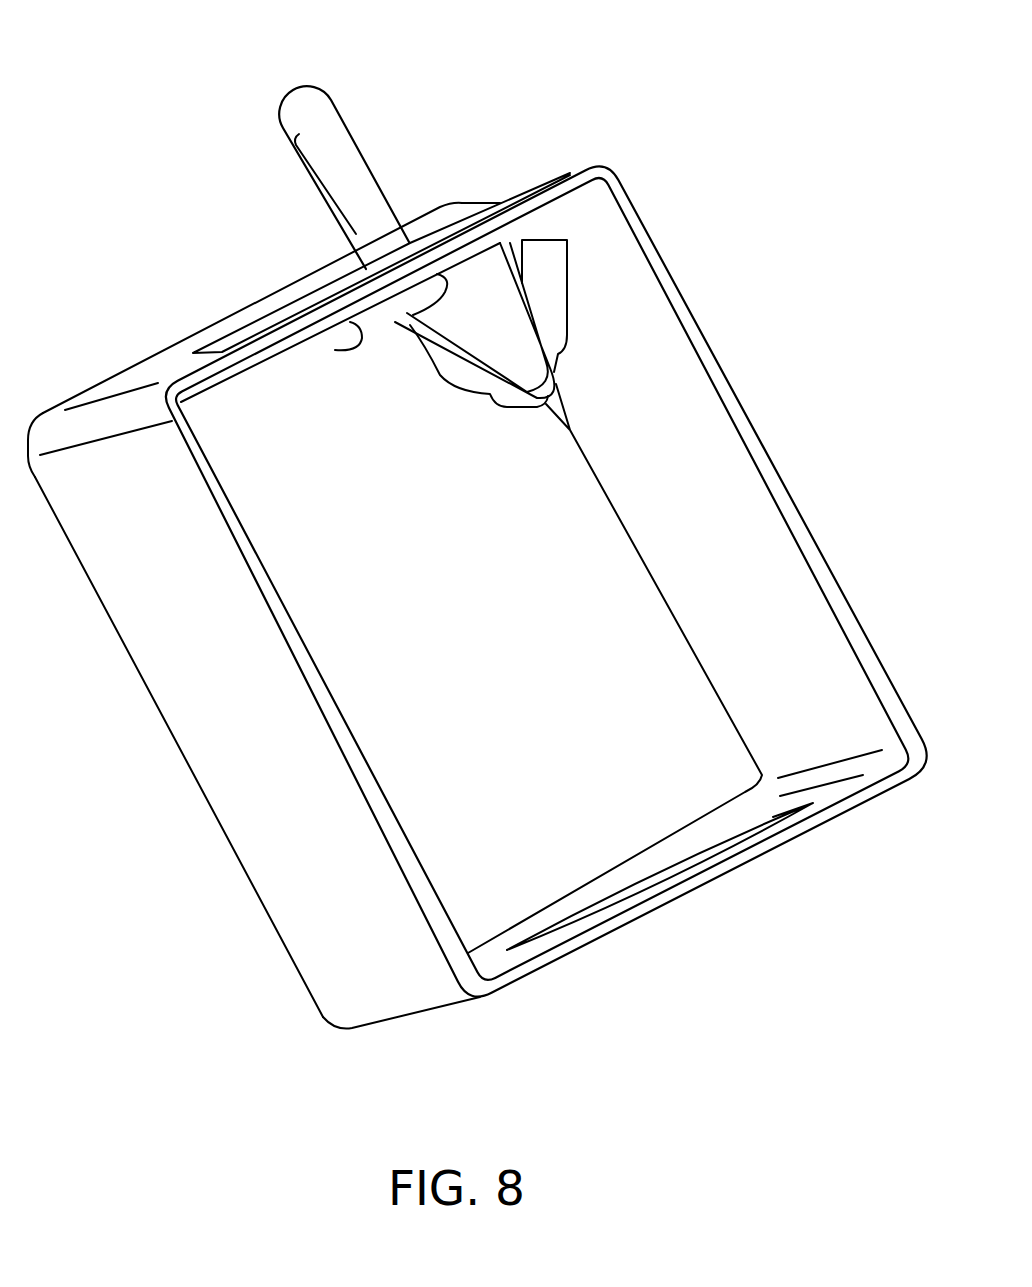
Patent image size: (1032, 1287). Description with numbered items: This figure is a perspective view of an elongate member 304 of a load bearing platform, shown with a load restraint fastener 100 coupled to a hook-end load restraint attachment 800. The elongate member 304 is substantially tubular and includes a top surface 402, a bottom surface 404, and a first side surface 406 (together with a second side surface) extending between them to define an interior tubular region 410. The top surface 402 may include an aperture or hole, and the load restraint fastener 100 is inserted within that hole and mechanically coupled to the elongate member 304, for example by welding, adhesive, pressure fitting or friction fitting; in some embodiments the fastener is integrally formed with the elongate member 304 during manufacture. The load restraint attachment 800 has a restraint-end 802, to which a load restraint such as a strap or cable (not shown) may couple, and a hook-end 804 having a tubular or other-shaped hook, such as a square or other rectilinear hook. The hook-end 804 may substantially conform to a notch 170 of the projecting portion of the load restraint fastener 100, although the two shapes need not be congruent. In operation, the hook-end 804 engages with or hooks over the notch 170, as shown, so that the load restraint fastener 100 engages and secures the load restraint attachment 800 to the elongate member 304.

The load restraint attachment 800 is at (256, 92).
The restraint-end 802 is at (336, 101).
The load restraint fastener 100 is at (481, 214).
The hook-end 804 is at (567, 277).
The top surface 402 is at (167, 347).
The notch 170 is at (570, 430).
The bottom surface 404 is at (840, 806).
The first side surface 406 is at (417, 897).
The interior tubular region 410 is at (542, 844).
The elongate member 304 is at (377, 1003).